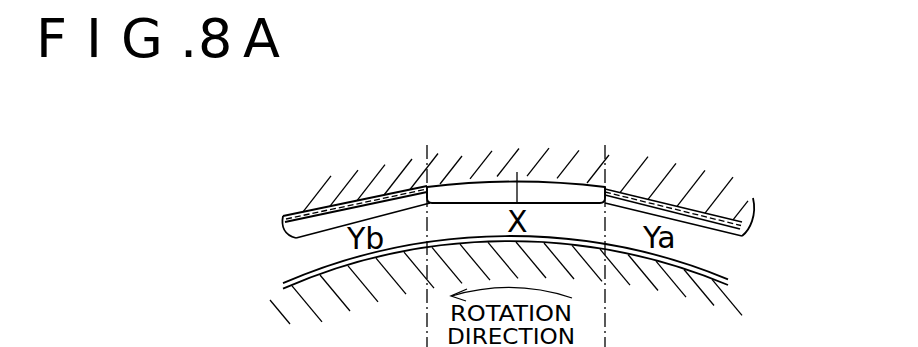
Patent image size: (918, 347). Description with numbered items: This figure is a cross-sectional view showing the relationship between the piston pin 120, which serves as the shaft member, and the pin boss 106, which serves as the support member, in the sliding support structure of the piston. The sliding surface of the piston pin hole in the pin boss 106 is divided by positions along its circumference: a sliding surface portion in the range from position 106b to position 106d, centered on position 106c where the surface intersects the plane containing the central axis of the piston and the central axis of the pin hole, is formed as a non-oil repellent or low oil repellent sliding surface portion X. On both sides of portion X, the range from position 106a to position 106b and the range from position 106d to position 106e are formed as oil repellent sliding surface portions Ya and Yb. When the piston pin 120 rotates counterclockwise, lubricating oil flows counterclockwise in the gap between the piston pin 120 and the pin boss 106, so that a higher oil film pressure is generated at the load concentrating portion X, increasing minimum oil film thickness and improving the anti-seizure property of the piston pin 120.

The piston pin boss 106 is at (513, 169).
The sliding surface position 106a is at (753, 198).
The sliding surface position 106b is at (605, 188).
The sliding surface position 106c is at (518, 173).
The sliding surface position 106d is at (427, 186).
The sliding surface position 106e is at (283, 215).
The piston pin 120 is at (673, 323).